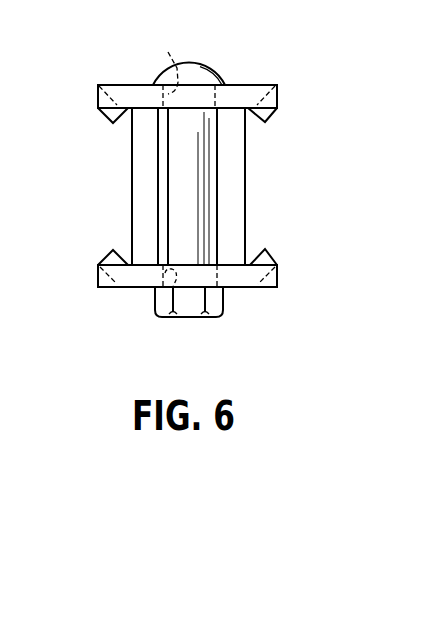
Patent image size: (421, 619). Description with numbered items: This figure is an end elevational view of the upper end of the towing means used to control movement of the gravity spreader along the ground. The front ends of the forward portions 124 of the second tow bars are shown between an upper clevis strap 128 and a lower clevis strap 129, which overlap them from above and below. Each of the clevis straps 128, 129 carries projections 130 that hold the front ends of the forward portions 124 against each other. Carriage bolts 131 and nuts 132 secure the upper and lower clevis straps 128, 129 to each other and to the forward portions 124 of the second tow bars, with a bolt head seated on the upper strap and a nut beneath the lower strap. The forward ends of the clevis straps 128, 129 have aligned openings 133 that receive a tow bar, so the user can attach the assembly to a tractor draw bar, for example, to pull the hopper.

The forward portions 124 is at (132, 172).
The upper clevis strap 128 is at (252, 85).
The lower clevis strap 129 is at (247, 288).
The projections 130 is at (266, 123).
The carriage bolts 131 is at (200, 62).
The nuts 132 is at (203, 318).
The aligned openings 133 is at (166, 51).